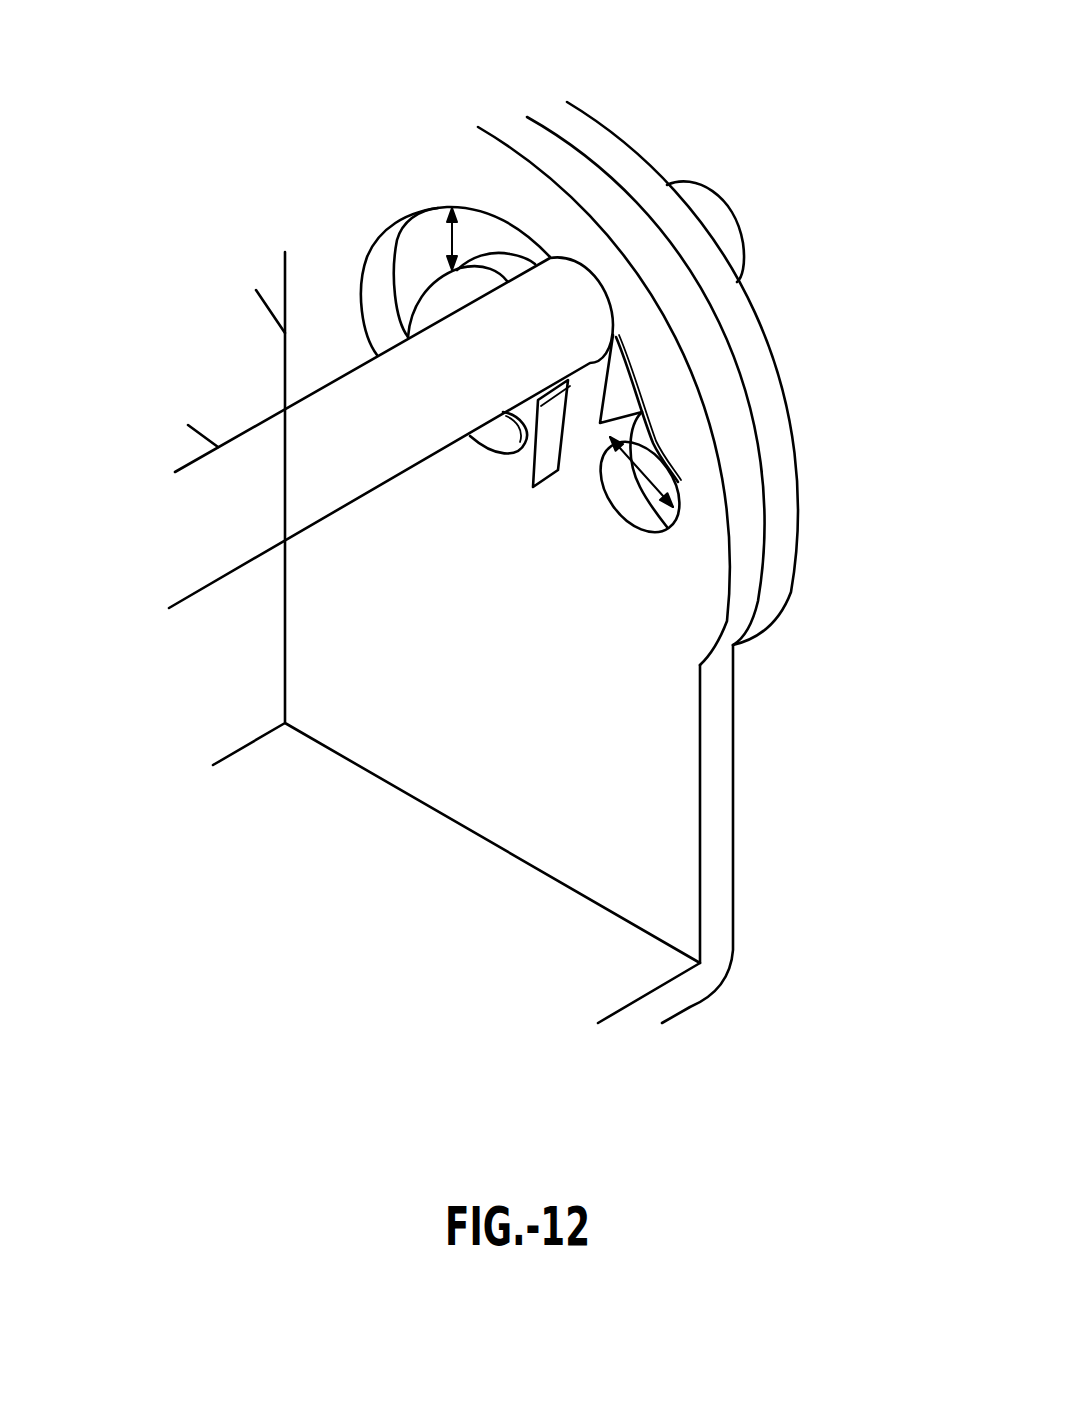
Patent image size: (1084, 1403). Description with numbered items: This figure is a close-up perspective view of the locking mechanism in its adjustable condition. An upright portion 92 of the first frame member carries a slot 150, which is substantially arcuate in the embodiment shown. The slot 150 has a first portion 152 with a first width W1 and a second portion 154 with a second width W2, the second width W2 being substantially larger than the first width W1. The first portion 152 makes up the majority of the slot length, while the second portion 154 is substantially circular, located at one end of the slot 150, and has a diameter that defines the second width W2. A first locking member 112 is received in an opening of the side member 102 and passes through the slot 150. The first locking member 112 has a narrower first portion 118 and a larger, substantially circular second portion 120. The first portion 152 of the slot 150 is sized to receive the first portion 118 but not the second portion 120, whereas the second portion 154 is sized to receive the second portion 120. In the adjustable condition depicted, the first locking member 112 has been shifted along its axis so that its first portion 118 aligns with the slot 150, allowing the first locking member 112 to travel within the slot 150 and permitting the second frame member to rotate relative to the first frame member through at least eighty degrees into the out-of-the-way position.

The upright portion 92 is at (667, 672).
The side member 102 is at (578, 127).
The first locking member 112 is at (725, 218).
The first portion 118 is at (611, 355).
The second portion 120 is at (360, 402).
The slot 150 is at (645, 360).
The first portion 152 is at (435, 208).
The second portion 154 is at (670, 463).
The first width W1 is at (452, 243).
The second width W2 is at (670, 473).